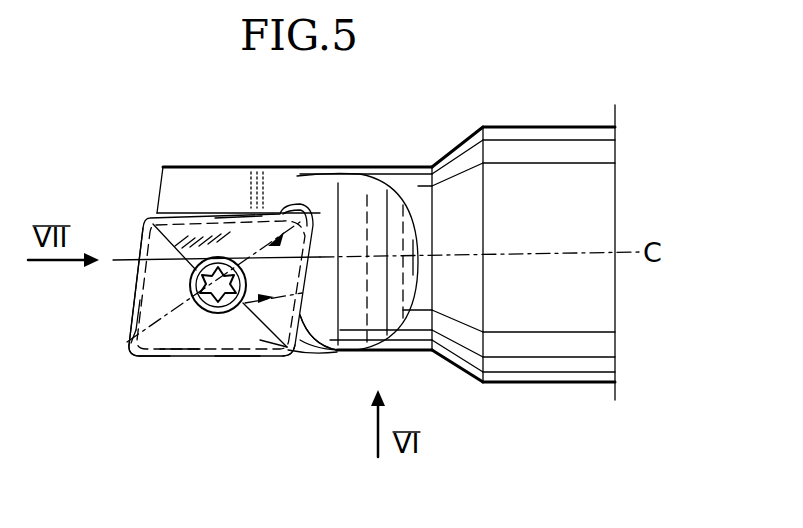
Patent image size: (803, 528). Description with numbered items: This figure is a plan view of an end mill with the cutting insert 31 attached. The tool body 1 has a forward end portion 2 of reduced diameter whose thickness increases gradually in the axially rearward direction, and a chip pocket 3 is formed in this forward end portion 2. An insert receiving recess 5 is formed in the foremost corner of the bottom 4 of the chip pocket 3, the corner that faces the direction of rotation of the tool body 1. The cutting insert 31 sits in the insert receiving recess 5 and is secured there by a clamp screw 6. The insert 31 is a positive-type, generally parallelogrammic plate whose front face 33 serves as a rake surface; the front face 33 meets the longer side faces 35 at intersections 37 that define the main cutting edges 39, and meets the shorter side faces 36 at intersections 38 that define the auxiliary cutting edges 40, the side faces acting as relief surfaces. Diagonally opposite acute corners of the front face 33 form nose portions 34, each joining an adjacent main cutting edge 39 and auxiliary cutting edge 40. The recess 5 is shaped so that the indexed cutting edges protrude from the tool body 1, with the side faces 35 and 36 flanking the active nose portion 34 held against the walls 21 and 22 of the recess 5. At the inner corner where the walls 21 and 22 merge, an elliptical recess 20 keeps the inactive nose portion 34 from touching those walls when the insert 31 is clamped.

The tool body 1 is at (549, 134).
The forward end portion 2 is at (365, 150).
The chip pocket 3 is at (389, 220).
The bottom of the chip pocket 4 is at (277, 178).
The insert receiving recess 5 is at (286, 212).
The clamp screw 6 is at (208, 262).
The recess of elliptical shape 20 is at (318, 216).
The wall of the insert receiving recess 21 is at (237, 221).
The wall of the insert receiving recess 22 is at (270, 332).
The cutting insert 31 is at (275, 383).
The front face 33 is at (229, 335).
The nose portion 34 is at (123, 368).
The longer side face 35 is at (232, 221).
The shorter side face 36 is at (128, 300).
The intersection of the front face with a longer side face 37 is at (172, 357).
The intersection of the front face with a shorter side face 38 is at (128, 315).
The main cutting edge 39 is at (152, 368).
The auxiliary cutting edge 40 is at (120, 342).